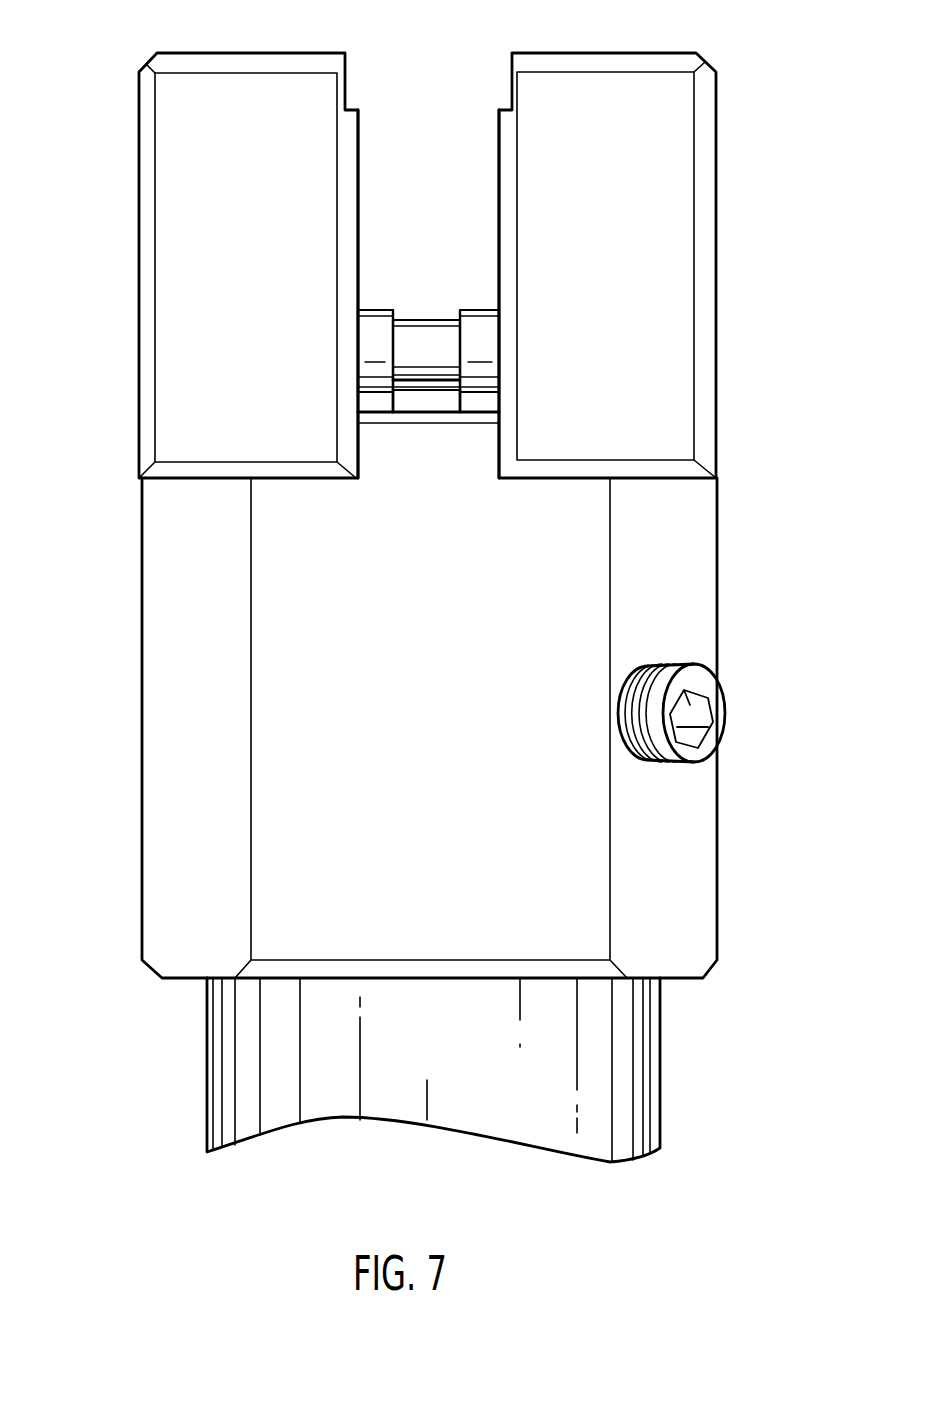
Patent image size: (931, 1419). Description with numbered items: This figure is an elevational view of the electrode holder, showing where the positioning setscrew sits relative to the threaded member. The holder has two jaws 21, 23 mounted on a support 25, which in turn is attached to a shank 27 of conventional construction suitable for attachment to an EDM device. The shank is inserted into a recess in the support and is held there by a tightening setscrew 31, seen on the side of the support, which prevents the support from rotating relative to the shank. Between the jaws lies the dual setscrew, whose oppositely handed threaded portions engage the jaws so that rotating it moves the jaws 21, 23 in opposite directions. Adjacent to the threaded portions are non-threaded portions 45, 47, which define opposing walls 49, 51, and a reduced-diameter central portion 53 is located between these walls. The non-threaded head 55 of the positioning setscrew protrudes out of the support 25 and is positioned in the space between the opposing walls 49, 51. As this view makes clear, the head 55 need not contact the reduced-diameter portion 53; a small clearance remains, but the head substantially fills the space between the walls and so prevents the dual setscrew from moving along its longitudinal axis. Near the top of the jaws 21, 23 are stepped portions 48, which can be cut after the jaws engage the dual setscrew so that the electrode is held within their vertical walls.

The jaw 21 is at (180, 295).
The jaw 23 is at (652, 345).
The support 25 is at (667, 578).
The shank 27 is at (603, 1093).
The tightening setscrew 31 is at (713, 700).
The non-threaded portion 45 is at (375, 330).
The non-threaded portion 47 is at (478, 325).
The stepped portion 48 is at (505, 88).
The opposing wall 49 is at (398, 310).
The opposing wall 51 is at (450, 310).
The reduced-diameter central portion 53 is at (428, 330).
The non-threaded head 55 is at (433, 400).